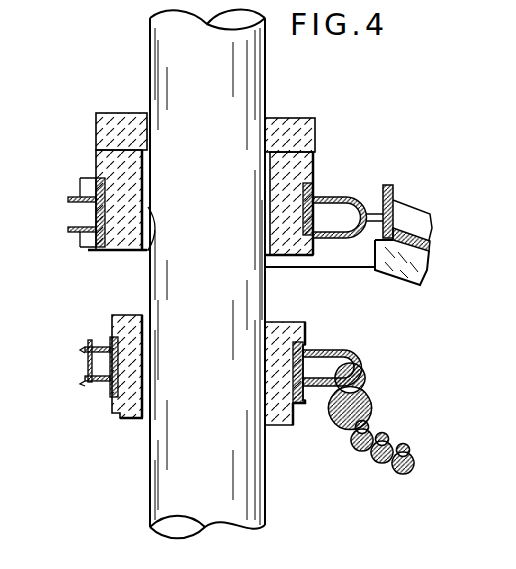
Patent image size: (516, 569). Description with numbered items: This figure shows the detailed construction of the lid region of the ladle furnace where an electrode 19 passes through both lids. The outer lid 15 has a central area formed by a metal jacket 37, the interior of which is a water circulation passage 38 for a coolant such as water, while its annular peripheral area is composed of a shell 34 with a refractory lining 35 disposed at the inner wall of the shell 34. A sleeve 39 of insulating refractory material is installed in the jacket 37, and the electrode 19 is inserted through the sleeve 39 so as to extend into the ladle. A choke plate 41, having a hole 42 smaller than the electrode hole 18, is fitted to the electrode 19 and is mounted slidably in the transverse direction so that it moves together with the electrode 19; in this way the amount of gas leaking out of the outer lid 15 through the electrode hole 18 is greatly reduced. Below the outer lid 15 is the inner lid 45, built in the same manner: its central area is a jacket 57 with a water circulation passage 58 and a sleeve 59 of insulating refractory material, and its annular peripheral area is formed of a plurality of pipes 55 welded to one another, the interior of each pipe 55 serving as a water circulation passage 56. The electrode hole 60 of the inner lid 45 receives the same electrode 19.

The electrode 19 is at (167, 47).
The hole 42 is at (148, 131).
The electrode hole 18 is at (148, 258).
The jacket 37 is at (71, 196).
The choke plate 41 is at (290, 128).
The sleeve 39 is at (287, 250).
The water circulation passage 38 is at (338, 216).
The shell 34 is at (410, 230).
The refractory lining 35 is at (388, 274).
The outer lid 15 is at (441, 203).
The jacket 57 is at (88, 382).
The sleeve 59 is at (286, 405).
The water circulation passage 58 is at (340, 366).
The pipe 55 is at (403, 453).
The water circulation passage 56 is at (403, 473).
The inner lid 45 is at (419, 447).
The electrode hole 60 is at (262, 432).